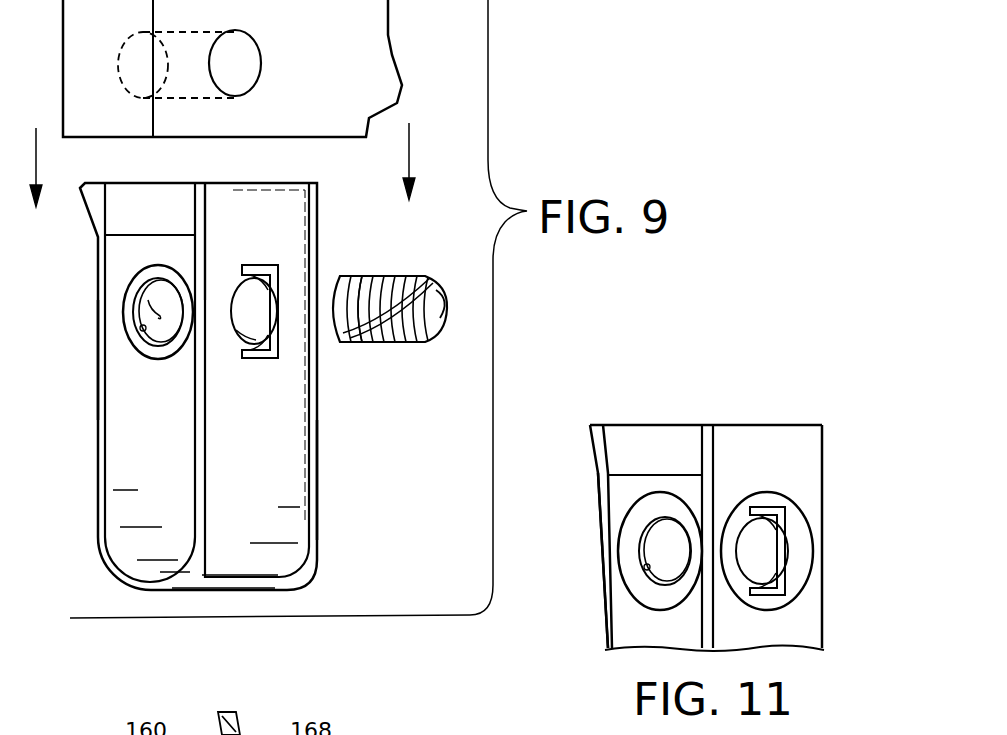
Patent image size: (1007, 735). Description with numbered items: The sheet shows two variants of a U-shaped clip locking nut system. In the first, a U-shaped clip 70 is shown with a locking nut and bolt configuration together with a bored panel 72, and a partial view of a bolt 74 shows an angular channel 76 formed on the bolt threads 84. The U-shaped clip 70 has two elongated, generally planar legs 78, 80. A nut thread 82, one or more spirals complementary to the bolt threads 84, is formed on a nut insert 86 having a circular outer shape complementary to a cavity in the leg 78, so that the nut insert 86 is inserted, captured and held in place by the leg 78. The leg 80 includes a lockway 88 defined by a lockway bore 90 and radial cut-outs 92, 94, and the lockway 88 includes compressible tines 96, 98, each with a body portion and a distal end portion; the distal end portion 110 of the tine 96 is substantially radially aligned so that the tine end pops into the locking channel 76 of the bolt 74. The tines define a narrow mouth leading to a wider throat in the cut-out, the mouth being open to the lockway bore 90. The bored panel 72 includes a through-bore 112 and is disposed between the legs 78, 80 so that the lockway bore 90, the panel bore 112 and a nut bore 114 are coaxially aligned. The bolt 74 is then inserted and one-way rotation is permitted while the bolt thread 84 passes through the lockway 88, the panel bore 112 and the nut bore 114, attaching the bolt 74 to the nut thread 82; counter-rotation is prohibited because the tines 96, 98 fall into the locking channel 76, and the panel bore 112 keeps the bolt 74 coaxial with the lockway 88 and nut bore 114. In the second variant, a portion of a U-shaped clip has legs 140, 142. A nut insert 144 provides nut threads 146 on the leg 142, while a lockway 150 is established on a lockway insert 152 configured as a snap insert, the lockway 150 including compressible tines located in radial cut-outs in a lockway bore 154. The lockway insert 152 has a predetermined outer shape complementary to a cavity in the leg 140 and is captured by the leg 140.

In FIG. 9, the U-shaped clip 70 is at (97, 508).
In FIG. 9, the bored panel 72 is at (62, 22).
In FIG. 9, the bolt 74 is at (420, 342).
In FIG. 9, the angular channel 76 is at (424, 275).
In FIG. 9, the leg 78 is at (97, 368).
In FIG. 9, the leg 80 is at (318, 473).
In FIG. 9, the nut thread 82 is at (140, 327).
In FIG. 9, the bolt threads 84 is at (388, 273).
In FIG. 9, the nut insert 86 is at (138, 310).
In FIG. 9, the lockway 88 is at (231, 334).
In FIG. 9, the lockway bore 90 is at (252, 313).
In FIG. 9, the radial cut-out 92 is at (262, 358).
In FIG. 9, the radial cut-out 94 is at (260, 266).
In FIG. 9, the compressible tine 96 is at (247, 360).
In FIG. 9, the compressible tine 98 is at (267, 268).
In FIG. 9, the distal end portion 110 is at (248, 336).
In FIG. 9, the through-bore 112 is at (244, 70).
In FIG. 9, the nut bore 114 is at (128, 298).
In FIG. 11, the leg 140 is at (825, 507).
In FIG. 11, the leg 142 is at (597, 495).
In FIG. 11, the nut insert 144 is at (617, 545).
In FIG. 11, the nut threads 146 is at (645, 572).
In FIG. 11, the lockway 150 is at (805, 590).
In FIG. 11, the lockway insert 152 is at (810, 542).
In FIG. 11, the lockway bore 154 is at (776, 552).